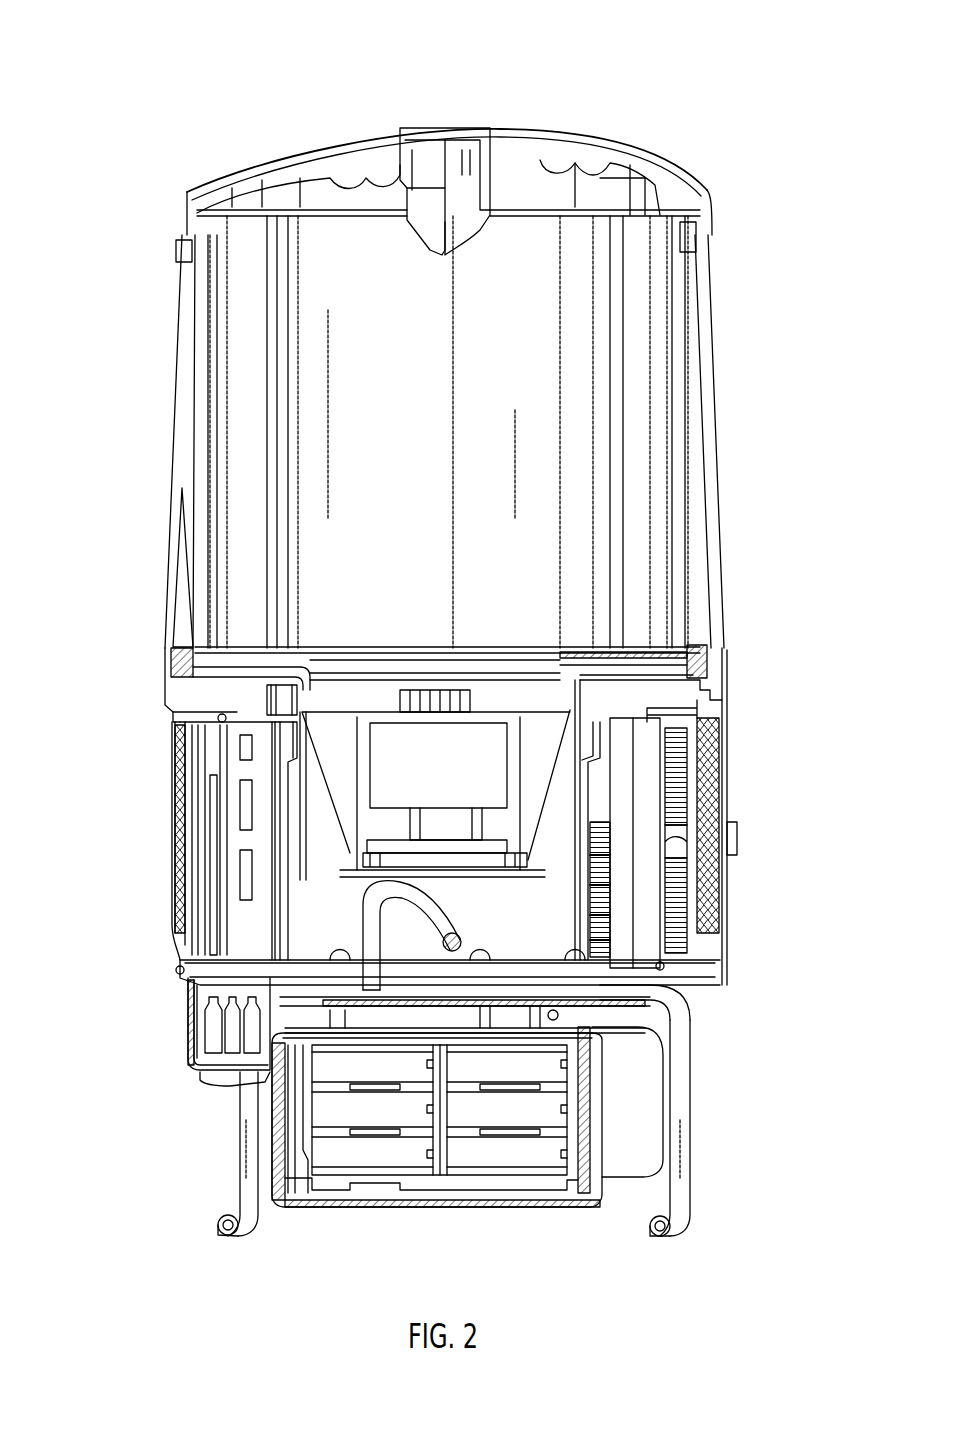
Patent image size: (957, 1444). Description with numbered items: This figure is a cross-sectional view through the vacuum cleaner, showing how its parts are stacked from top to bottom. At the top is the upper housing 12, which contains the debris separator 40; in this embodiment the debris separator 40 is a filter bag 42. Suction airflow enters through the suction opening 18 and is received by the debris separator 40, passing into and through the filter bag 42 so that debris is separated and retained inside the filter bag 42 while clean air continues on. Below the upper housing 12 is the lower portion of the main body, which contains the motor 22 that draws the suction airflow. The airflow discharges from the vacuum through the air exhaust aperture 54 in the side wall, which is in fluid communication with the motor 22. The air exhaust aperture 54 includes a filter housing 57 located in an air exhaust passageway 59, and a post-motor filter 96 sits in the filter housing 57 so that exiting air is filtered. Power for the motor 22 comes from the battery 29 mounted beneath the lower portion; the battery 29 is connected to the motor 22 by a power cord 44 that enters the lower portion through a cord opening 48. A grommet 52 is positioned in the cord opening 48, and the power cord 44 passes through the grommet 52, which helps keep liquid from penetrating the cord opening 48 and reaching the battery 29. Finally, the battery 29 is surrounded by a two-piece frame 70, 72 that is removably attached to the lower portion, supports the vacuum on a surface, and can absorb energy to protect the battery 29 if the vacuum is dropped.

The upper housing 12 is at (655, 412).
The suction opening 18 is at (457, 140).
The debris separator 40 is at (548, 336).
The filter bag 42 is at (612, 585).
The motor 22 is at (450, 760).
The filter housing 57 is at (636, 785).
The air exhaust aperture 54 is at (750, 822).
The post-motor filter 96 is at (238, 878).
The air exhaust passageway 59 is at (640, 938).
The power cord 44 is at (370, 920).
The grommet 52 is at (380, 952).
The cord opening 48 is at (412, 958).
The battery 29 is at (400, 1148).
The frame 72 is at (248, 1175).
The frame 70 is at (680, 1205).